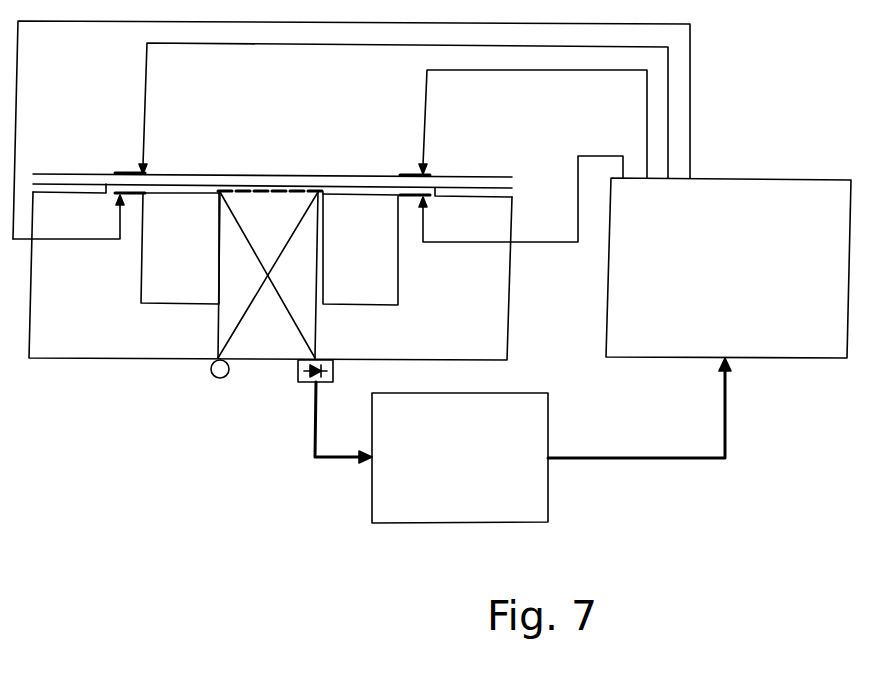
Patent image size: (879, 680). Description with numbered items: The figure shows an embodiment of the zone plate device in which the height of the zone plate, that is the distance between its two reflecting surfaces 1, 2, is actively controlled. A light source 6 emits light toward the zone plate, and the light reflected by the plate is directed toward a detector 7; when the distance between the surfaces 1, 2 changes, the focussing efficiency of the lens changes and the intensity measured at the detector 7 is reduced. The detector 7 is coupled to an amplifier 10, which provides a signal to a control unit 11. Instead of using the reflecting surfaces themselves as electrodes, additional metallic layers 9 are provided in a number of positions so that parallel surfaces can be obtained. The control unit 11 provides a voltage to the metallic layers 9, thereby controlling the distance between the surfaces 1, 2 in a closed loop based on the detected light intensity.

The reflecting surface 1 is at (260, 194).
The reflecting surface 2 is at (258, 184).
The metallic layers 9 is at (131, 172).
The light source 6 is at (215, 389).
The detector 7 is at (305, 389).
The amplifier 10 is at (460, 458).
The control unit 11 is at (728, 268).